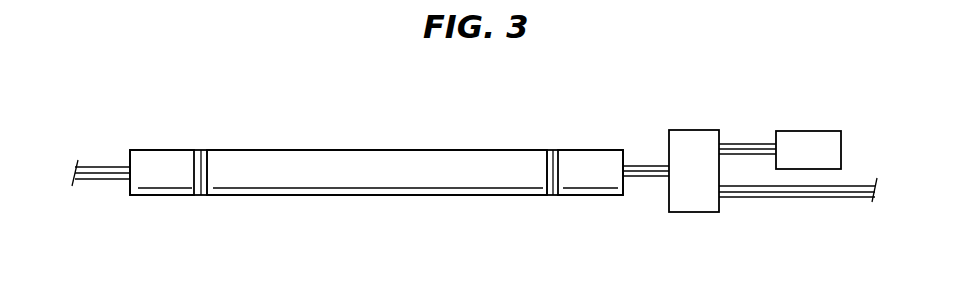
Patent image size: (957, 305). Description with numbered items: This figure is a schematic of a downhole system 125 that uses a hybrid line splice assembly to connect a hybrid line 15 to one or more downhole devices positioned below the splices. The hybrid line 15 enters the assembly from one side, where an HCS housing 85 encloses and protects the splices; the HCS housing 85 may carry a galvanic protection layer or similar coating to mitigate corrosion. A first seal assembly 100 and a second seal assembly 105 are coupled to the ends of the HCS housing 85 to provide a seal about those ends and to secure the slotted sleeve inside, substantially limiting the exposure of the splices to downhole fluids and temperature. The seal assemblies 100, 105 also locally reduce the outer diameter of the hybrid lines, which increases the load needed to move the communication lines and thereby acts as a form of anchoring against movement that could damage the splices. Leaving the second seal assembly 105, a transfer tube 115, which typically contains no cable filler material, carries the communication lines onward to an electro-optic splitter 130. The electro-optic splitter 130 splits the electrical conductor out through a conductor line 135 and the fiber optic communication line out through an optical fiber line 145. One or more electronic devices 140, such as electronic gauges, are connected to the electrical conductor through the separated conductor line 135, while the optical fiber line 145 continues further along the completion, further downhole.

The hybrid line 15 is at (98, 170).
The HCS housing 85 is at (440, 148).
The first seal assembly 100 is at (162, 150).
The second seal assembly 105 is at (590, 148).
The transfer tube 115 is at (647, 173).
The delivery device 125 is at (252, 122).
The electro-optic splitter 130 is at (692, 130).
The conductor line 135 is at (743, 148).
The electronic devices 140 is at (812, 131).
The optical fiber line 145 is at (812, 193).